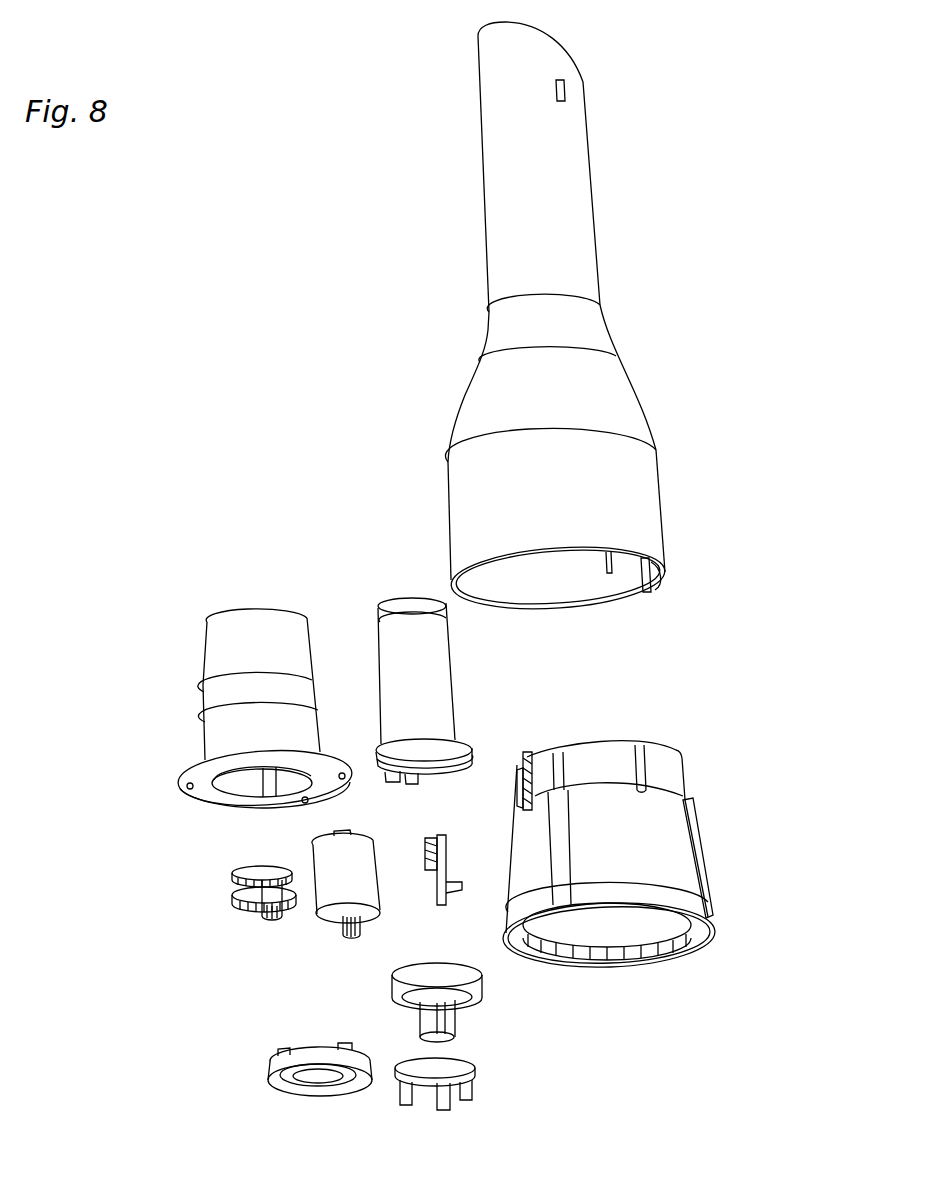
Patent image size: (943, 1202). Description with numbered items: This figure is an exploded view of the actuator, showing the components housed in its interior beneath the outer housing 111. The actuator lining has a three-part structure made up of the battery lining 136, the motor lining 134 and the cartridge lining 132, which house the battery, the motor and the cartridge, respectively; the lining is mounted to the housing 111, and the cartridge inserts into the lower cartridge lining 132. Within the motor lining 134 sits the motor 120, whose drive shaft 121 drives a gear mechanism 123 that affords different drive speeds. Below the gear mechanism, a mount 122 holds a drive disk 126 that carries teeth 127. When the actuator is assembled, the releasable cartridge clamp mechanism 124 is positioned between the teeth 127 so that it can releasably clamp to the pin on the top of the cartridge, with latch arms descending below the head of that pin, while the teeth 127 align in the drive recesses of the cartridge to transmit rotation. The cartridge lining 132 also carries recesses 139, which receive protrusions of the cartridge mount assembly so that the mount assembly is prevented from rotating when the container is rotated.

The housing 111 is at (551, 265).
The motor 120 is at (318, 920).
The drive shaft 121 is at (345, 938).
The mount 122 is at (268, 1083).
The gear mechanism 123 is at (232, 898).
The releasable cartridge clamp mechanism 124 is at (480, 1000).
The drive disk 126 is at (473, 1068).
The teeth 127 is at (470, 1095).
The cartridge lining 132 is at (673, 848).
The motor lining 134 is at (203, 700).
The battery lining 136 is at (455, 680).
The recesses 139 is at (660, 950).